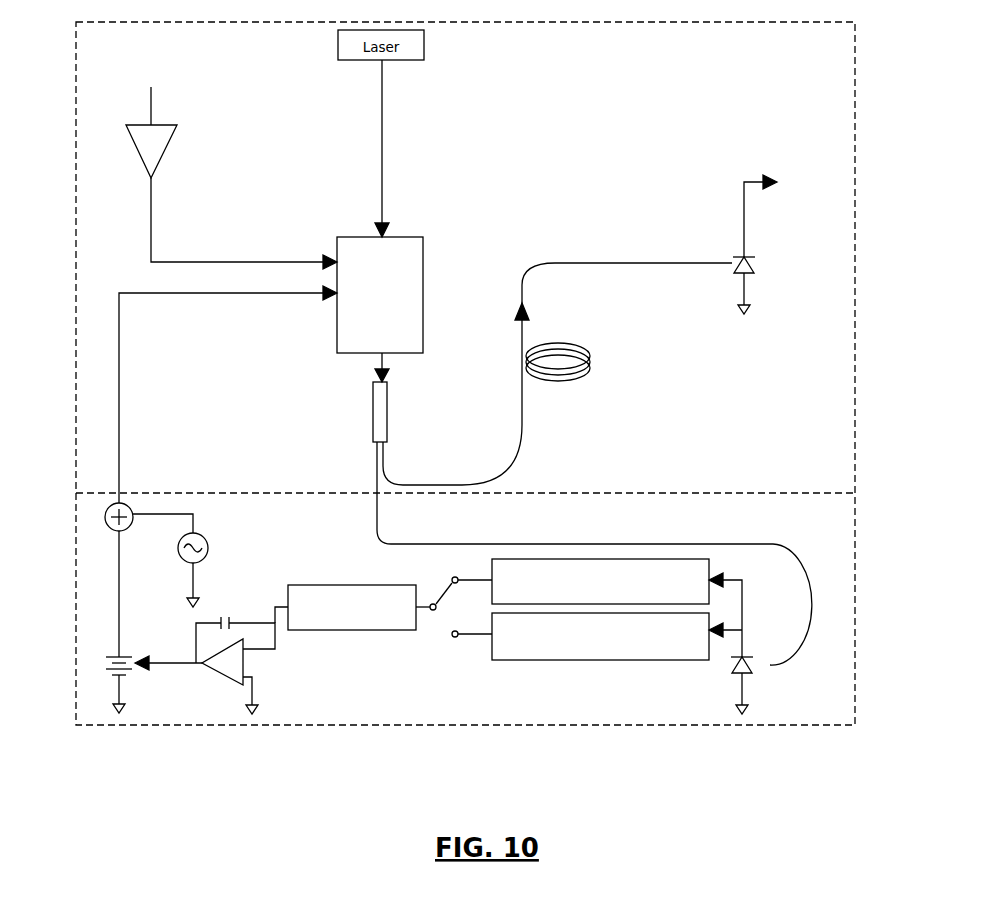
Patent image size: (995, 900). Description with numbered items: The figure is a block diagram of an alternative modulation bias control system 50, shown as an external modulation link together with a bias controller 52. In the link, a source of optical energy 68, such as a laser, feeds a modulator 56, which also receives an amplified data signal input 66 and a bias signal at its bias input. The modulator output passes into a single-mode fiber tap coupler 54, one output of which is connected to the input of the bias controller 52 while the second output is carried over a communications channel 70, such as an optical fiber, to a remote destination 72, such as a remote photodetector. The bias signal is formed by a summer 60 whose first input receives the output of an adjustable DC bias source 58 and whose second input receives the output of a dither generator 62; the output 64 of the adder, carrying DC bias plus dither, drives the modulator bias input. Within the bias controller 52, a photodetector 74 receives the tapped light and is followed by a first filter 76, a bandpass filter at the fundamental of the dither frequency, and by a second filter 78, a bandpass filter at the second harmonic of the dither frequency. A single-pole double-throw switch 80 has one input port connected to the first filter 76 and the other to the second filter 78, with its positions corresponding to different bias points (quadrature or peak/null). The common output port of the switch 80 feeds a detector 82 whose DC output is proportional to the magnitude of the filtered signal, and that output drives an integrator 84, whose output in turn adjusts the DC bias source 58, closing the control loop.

The modulation bias control system 50 is at (776, 838).
The bias controller 52 is at (75, 520).
The single-mode fiber tap coupler 54 is at (373, 412).
The modulator 56 is at (421, 237).
The adjustable DC bias source 58 is at (122, 656).
The summer 60 is at (130, 528).
The dither generator 62 is at (204, 561).
The output of the adder 64 is at (219, 296).
The amplified data signal input 66 is at (219, 260).
The source of optical energy 68 is at (383, 126).
The communications channel 70 is at (588, 345).
The remote destination 72 is at (752, 254).
The photodetector 74 is at (748, 658).
The first filter 76 is at (711, 568).
The second filter 78 is at (560, 661).
The single-pole double-throw switch 80 is at (395, 654).
The detector 82 is at (341, 585).
The integrator 84 is at (280, 685).